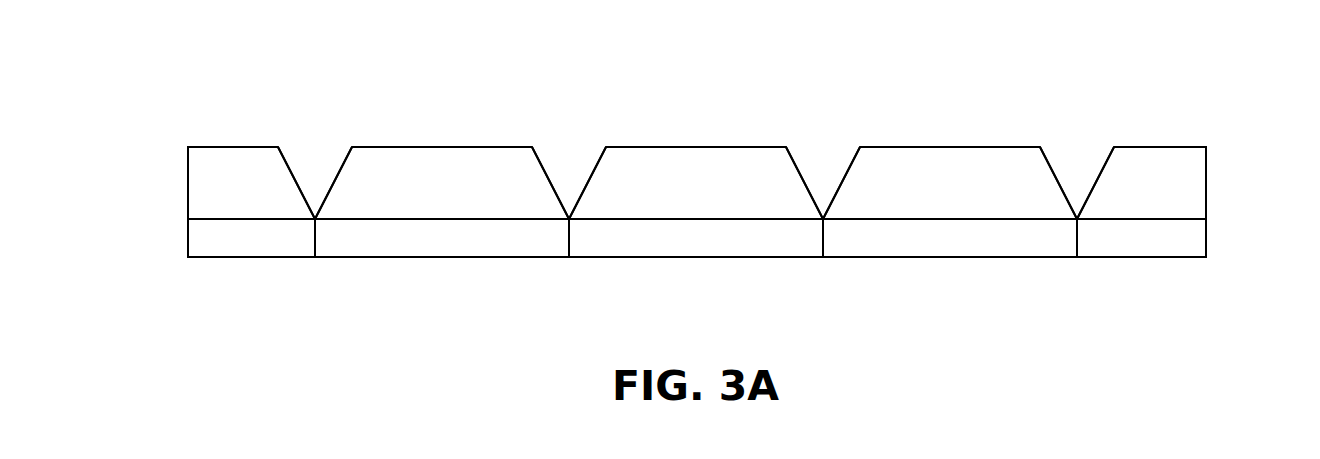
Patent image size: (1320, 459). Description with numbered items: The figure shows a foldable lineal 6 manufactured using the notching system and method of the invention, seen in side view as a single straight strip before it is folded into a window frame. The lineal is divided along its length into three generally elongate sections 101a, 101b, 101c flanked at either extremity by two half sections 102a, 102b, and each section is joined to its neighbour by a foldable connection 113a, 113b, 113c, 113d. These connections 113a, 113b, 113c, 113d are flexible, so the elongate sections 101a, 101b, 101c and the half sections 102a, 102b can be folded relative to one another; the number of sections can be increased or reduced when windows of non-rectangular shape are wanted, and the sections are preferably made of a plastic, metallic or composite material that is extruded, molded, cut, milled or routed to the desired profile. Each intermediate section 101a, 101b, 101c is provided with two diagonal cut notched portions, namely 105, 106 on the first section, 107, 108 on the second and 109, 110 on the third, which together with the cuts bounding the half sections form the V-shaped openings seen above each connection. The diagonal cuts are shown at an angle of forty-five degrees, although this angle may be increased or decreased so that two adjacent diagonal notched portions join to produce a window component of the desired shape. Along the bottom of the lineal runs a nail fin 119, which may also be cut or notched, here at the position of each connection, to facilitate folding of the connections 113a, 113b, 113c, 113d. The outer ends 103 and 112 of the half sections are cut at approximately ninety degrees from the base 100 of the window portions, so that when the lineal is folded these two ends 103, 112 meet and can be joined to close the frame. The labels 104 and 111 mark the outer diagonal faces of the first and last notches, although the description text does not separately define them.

The base 100 is at (350, 258).
The foldable lineal 6 is at (706, 202).
The nail fin 119 is at (497, 236).
The end 103 is at (187, 183).
The end 112 is at (1206, 185).
The half section 102a is at (225, 146).
The half section 102b is at (1167, 166).
The elongate section 101a is at (402, 165).
The elongate section 101b is at (656, 165).
The elongate section 101c is at (910, 165).
The first groove left sidewall 104 is at (290, 168).
The diagonal cut notched portion 105 is at (335, 172).
The diagonal cut notched portion 106 is at (544, 168).
The diagonal cut notched portion 107 is at (589, 172).
The diagonal cut notched portion 108 is at (798, 168).
The diagonal cut notched portion 109 is at (843, 172).
The diagonal cut notched portion 110 is at (1052, 168).
The fourth groove right sidewall 111 is at (1097, 172).
The foldable connection 113a is at (315, 219).
The foldable connection 113b is at (569, 219).
The foldable connection 113c is at (823, 219).
The foldable connection 113d is at (1077, 219).